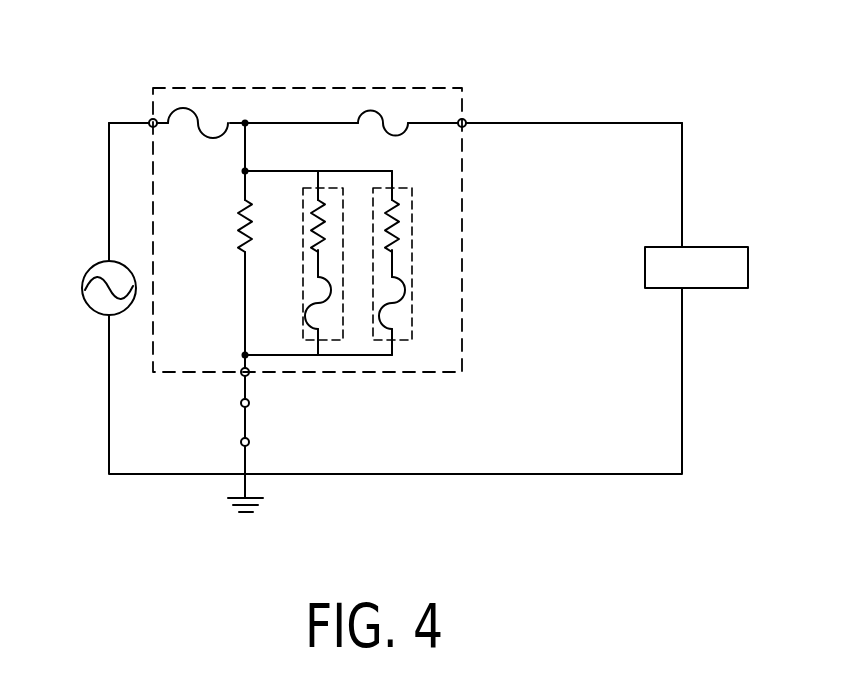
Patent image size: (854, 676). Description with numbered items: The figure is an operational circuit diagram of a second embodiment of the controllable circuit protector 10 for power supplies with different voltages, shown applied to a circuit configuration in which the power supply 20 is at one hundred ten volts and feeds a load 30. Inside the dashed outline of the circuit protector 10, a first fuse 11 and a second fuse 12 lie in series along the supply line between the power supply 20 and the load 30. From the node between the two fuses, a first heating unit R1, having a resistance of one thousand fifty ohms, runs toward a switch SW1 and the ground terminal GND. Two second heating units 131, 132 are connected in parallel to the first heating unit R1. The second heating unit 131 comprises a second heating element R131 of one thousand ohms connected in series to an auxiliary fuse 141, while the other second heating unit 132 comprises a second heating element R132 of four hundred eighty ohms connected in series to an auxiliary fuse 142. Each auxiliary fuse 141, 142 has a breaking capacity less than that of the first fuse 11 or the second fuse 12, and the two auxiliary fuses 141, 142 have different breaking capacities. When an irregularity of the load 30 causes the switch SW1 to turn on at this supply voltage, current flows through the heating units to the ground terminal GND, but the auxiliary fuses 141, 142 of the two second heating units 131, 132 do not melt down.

The controllable circuit protector 10 is at (190, 85).
The first fuse 11 is at (215, 124).
The second fuse 12 is at (397, 122).
The second heating unit 131 is at (318, 338).
The second heating unit 132 is at (415, 190).
The second heating element R131 is at (317, 197).
The second heating element R132 is at (400, 226).
The auxiliary fuse 141 is at (300, 317).
The auxiliary fuse 142 is at (407, 292).
The first heating unit R1 is at (229, 226).
The switch SW1 is at (218, 422).
The ground terminal GND is at (217, 507).
The power supply 20 is at (95, 265).
The load 30 is at (707, 245).